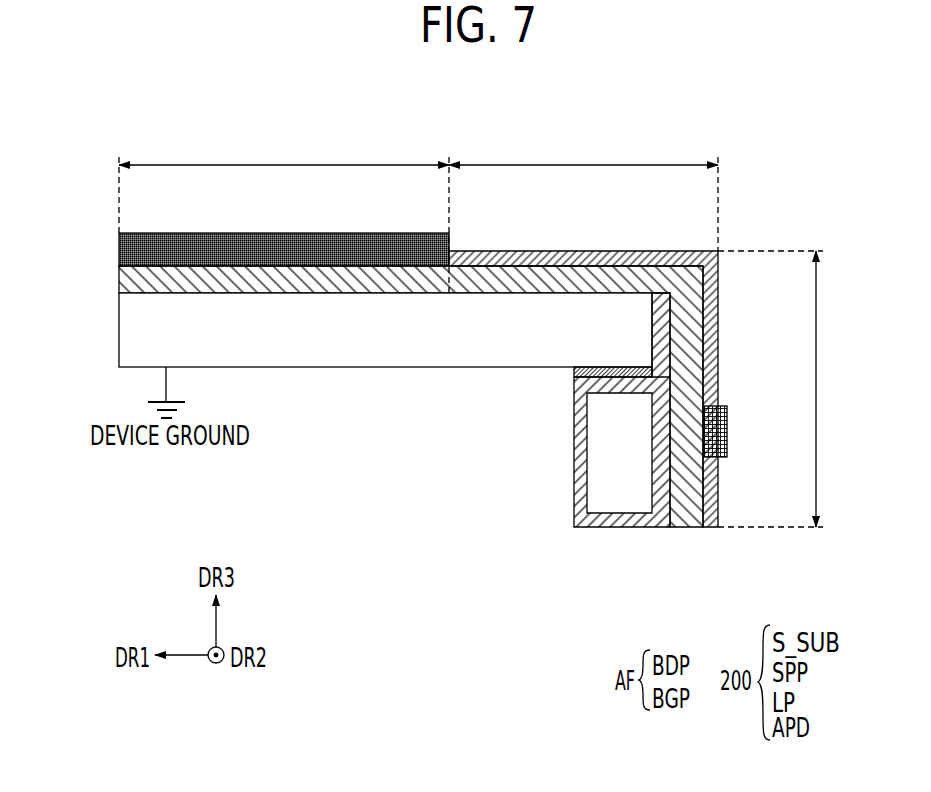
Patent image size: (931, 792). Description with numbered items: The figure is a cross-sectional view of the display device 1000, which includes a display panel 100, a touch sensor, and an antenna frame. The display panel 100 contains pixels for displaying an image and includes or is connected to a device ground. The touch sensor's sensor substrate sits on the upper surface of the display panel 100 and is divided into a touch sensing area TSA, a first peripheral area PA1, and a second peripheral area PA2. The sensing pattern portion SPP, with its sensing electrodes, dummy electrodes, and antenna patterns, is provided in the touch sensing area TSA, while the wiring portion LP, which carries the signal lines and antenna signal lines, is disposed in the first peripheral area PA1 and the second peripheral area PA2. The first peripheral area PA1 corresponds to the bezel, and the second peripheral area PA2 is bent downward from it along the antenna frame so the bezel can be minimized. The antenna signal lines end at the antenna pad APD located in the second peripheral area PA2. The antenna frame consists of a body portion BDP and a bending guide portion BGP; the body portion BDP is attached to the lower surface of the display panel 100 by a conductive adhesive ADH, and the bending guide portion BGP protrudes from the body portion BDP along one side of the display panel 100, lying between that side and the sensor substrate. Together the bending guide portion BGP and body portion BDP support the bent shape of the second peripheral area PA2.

The display device 1000 is at (437, 138).
The display panel 100 is at (119, 331).
The sensing pattern portion SPP is at (119, 249).
The wiring portion LP is at (634, 256).
The bending guide portion BGP is at (663, 310).
The body portion BDP is at (607, 529).
The adhesive ADH is at (573, 370).
The antenna pad APD is at (728, 432).
The touch sensing area TSA is at (284, 147).
The first peripheral area PA1 is at (583, 147).
The second peripheral area PA2 is at (837, 389).